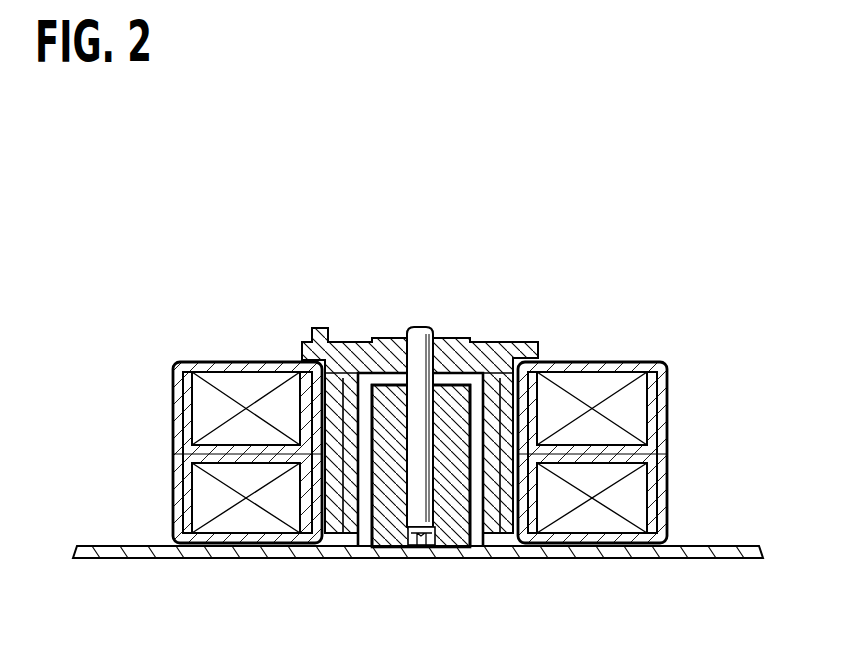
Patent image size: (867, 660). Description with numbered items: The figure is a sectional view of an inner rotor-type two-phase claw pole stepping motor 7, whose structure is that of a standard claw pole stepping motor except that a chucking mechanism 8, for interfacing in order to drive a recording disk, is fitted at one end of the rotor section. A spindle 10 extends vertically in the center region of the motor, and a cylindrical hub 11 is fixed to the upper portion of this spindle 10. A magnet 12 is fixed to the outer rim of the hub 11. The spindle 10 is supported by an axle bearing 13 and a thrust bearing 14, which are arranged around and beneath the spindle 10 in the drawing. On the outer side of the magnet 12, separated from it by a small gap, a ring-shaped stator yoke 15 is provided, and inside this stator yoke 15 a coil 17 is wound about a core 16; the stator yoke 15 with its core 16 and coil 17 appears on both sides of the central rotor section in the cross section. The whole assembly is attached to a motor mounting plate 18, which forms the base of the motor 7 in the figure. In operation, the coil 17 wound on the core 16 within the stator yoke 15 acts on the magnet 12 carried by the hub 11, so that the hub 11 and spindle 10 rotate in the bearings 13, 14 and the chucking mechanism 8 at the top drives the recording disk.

The spindle motor 7 is at (640, 314).
The chucking mechanism 8 is at (535, 277).
The spindle 10 is at (423, 333).
The cylindrical hub 11 is at (381, 353).
The magnet 12 is at (332, 400).
The axle bearing 13 is at (390, 510).
The thrust bearing 14 is at (429, 530).
The stator yoke 15 is at (451, 495).
The core 16 is at (305, 520).
The coil 17 is at (240, 527).
The motor mounting plate 18 is at (718, 560).